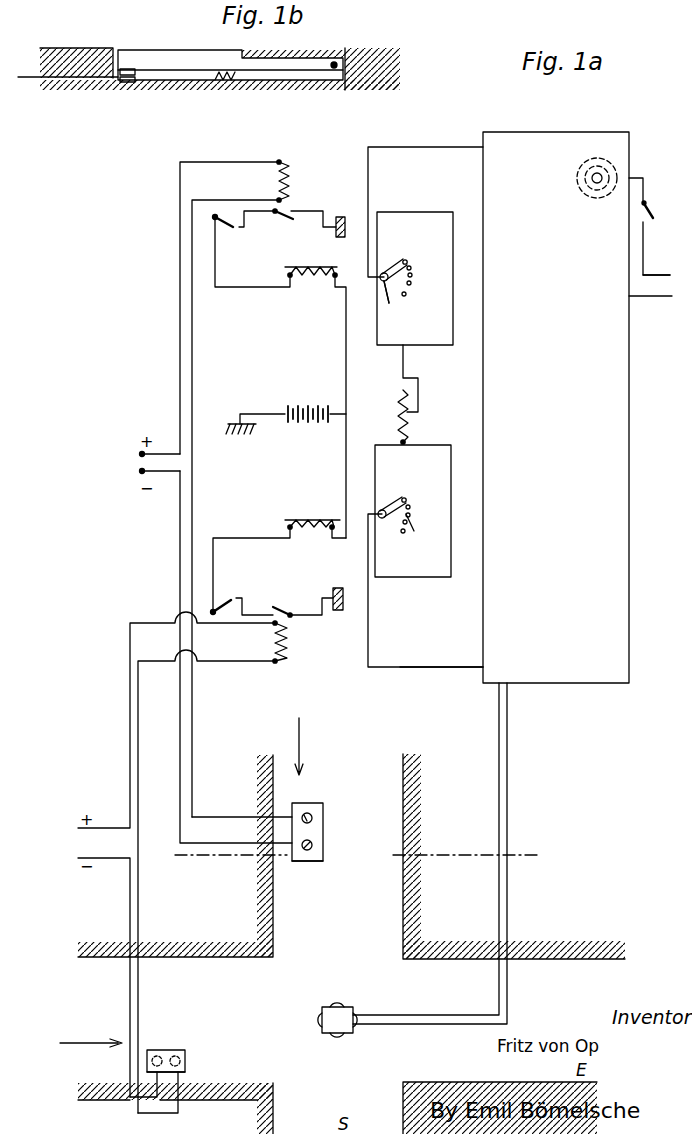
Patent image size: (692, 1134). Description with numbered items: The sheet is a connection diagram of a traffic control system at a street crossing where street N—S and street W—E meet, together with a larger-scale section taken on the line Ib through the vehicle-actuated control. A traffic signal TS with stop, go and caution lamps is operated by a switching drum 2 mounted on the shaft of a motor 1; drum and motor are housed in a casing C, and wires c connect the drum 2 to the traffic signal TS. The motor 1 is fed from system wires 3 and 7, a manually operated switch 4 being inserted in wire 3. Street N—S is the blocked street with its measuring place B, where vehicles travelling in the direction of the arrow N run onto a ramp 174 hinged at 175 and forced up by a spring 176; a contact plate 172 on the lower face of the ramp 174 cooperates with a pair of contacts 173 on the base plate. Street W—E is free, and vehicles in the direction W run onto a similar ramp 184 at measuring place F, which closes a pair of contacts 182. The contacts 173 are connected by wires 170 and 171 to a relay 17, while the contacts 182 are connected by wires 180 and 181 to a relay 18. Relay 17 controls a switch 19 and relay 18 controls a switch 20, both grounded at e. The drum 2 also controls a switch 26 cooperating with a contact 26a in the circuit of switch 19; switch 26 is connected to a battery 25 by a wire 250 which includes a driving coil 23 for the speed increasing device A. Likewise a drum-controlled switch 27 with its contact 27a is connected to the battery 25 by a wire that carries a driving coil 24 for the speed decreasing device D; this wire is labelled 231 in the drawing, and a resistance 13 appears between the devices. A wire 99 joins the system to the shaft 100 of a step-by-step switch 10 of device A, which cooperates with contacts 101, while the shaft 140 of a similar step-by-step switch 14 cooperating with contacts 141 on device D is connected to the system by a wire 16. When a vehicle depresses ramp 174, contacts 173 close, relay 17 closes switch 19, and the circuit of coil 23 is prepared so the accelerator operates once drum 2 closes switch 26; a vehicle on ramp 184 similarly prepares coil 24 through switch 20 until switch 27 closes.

In FIG. 1A, the motor 1 is at (610, 173).
In FIG. 1A, the switching drum 2 is at (606, 168).
In FIG. 1A, the wire 3 is at (668, 275).
In FIG. 1A, the manually operated switch 4 is at (656, 216).
In FIG. 1A, the wire 7 is at (663, 300).
In FIG. 1A, the step-by-step switch 10 is at (404, 259).
In FIG. 1A, the resistor 13 is at (397, 407).
In FIG. 1A, the step-by-step switch 14 is at (410, 503).
In FIG. 1A, the wire 16 is at (421, 668).
In FIG. 1A, the relay 17 is at (291, 182).
In FIG. 1A, the relay 18 is at (289, 644).
In FIG. 1A, the switch 19 is at (292, 210).
In FIG. 1A, the switch 20 is at (286, 611).
In FIG. 1A, the driving coil 23 is at (326, 270).
In FIG. 1A, the driving coil 24 is at (308, 518).
In FIG. 1A, the battery 25 is at (304, 408).
In FIG. 1A, the switch 26 is at (244, 229).
In FIG. 1A, the contact 26a is at (233, 235).
In FIG. 1A, the switch 27 is at (245, 590).
In FIG. 1A, the contact 27a is at (235, 603).
In FIG. 1A, the wire 99 is at (453, 147).
In FIG. 1A, the shaft 100 is at (400, 304).
In FIG. 1A, the set of contacts 101 is at (414, 283).
In FIG. 1A, the shaft 140 is at (385, 510).
In FIG. 1A, the set of contacts 141 is at (410, 525).
In FIG. 1A, the wire 170 is at (178, 182).
In FIG. 1B, the wire 170 is at (74, 84).
In FIG. 1A, the wire 171 is at (194, 393).
In FIG. 1B, the wire 171 is at (209, 69).
In FIG. 1B, the contact plate 172 is at (133, 69).
In FIG. 1A, the pair of contacts 173 is at (321, 809).
In FIG. 1B, the pair of contacts 173 is at (135, 82).
In FIG. 1A, the ramp 174 is at (326, 852).
In FIG. 1B, the ramp 174 is at (215, 46).
In FIG. 1B, the hinge 175 is at (337, 58).
In FIG. 1B, the spring 176 is at (226, 80).
In FIG. 1A, the wire 180 is at (128, 630).
In FIG. 1A, the wire 181 is at (140, 737).
In FIG. 1A, the pair of contacts 182 is at (157, 1054).
In FIG. 1A, the ramp 184 is at (180, 1052).
In FIG. 1A, the conductor 231 is at (238, 530).
In FIG. 1A, the wire 250 is at (258, 288).
In FIG. 1A, the speed increasing device A is at (455, 302).
In FIG. 1A, the measuring place B is at (316, 832).
In FIG. 1A, the casing C is at (630, 442).
In FIG. 1A, the speed decreasing device D is at (449, 510).
In FIG. 1A, the measuring place F is at (186, 1053).
In FIG. 1A, the street direction N is at (310, 730).
In FIG. 1A, the street direction W is at (91, 1046).
In FIG. 1A, the traffic signal TS is at (340, 1008).
In FIG. 1A, the wires c is at (501, 790).
In FIG. 1A, the ground e is at (345, 416).
In FIG. 1A, the section line Ib is at (192, 884).